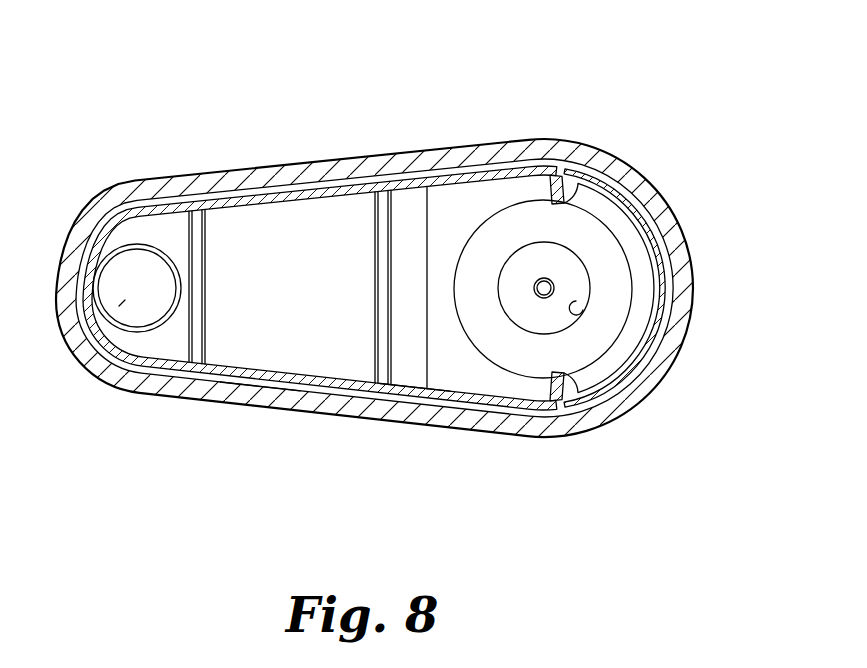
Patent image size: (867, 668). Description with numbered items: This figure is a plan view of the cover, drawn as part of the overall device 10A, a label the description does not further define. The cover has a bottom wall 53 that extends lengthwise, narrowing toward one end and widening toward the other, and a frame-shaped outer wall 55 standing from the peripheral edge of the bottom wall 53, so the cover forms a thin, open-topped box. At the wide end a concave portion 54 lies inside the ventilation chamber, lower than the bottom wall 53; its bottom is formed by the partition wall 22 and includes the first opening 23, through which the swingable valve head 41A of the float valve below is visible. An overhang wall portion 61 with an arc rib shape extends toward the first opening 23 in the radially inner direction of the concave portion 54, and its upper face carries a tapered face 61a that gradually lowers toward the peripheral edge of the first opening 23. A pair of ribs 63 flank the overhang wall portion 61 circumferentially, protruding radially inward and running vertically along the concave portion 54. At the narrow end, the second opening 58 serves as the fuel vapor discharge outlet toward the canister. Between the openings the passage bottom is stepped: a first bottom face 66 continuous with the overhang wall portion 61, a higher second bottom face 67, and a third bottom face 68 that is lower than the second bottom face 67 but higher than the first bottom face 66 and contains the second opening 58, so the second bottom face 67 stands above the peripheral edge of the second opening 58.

The chain case 10A is at (322, 146).
The bottom wall 53 is at (254, 232).
The overhang wall portion 61 is at (488, 192).
The ribs 63 is at (560, 186).
The concave portion 54 is at (593, 234).
The valve head 41A is at (553, 287).
The first opening 23 is at (582, 303).
The partition wall 22 is at (628, 330).
The second opening 58 is at (123, 301).
The third bottom face 68 is at (163, 345).
The outer wall 55 is at (253, 373).
The second bottom face 67 is at (308, 353).
The first bottom face 66 is at (412, 367).
The tapered face 61a is at (443, 295).